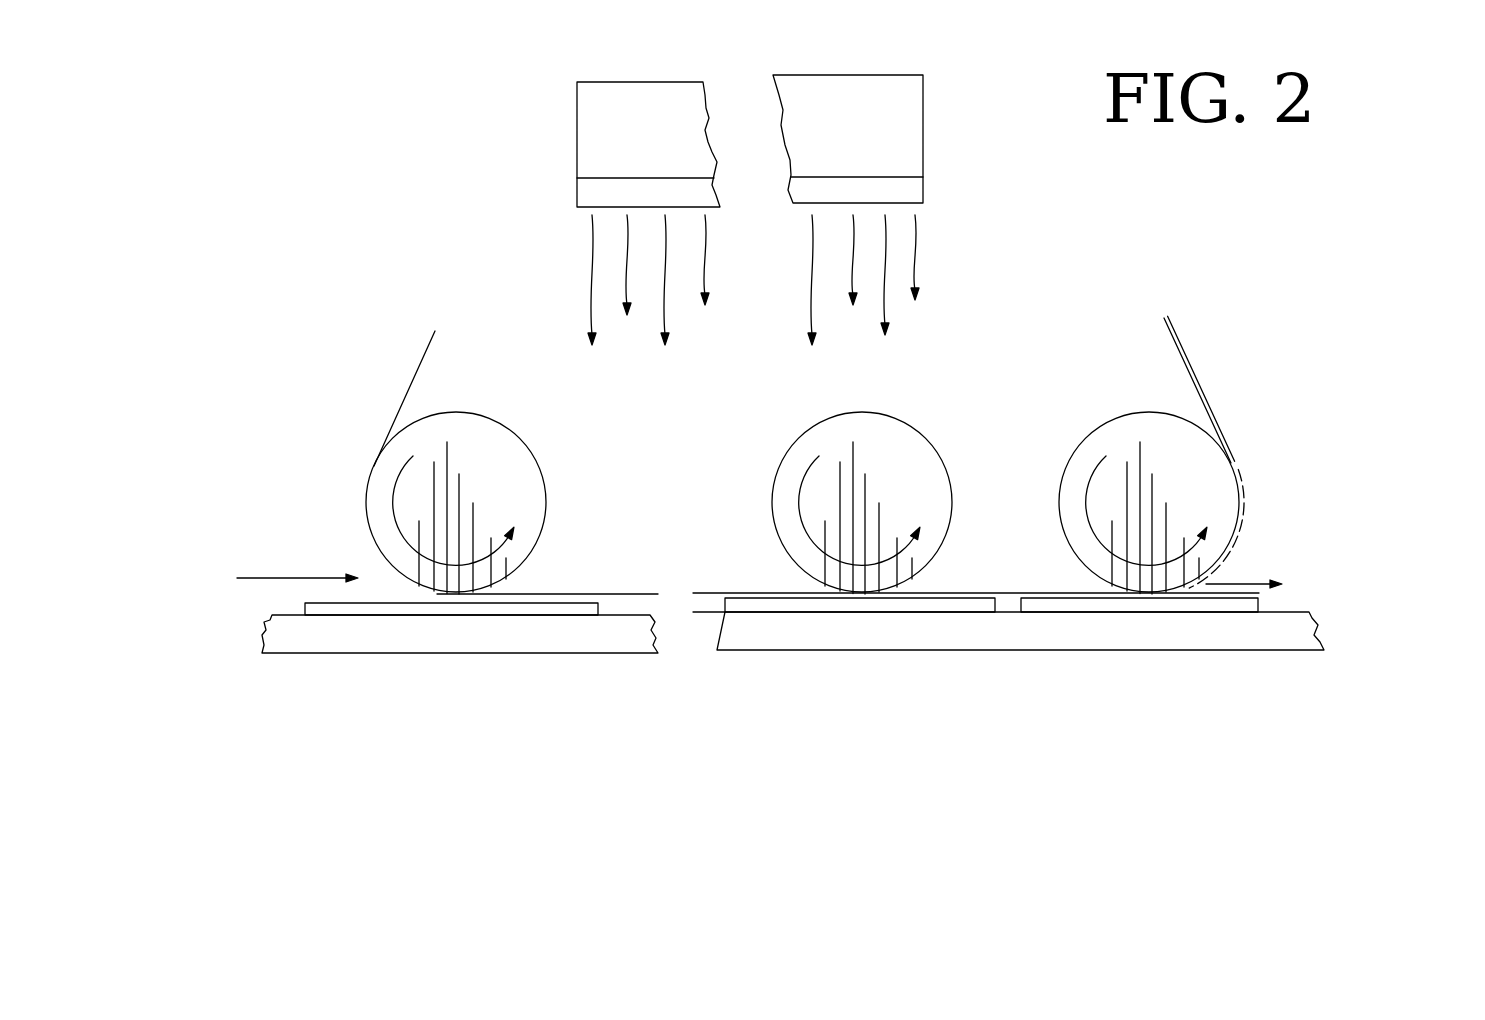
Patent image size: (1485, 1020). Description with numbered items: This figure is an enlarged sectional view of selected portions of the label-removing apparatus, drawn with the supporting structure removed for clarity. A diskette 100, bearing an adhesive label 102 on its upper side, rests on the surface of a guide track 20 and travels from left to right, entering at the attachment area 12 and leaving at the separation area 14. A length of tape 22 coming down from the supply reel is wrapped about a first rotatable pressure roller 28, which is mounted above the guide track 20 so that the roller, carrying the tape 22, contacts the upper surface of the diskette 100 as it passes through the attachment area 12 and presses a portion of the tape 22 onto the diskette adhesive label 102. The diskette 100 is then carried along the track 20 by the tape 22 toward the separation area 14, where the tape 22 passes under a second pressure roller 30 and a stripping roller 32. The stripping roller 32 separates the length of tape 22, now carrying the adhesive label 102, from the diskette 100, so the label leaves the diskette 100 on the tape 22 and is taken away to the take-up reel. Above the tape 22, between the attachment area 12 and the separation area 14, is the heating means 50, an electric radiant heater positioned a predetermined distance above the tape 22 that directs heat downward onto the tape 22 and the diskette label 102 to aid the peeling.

The heating means 50 is at (605, 140).
The tape 22 is at (397, 383).
The adhesive label 102 is at (1246, 440).
The separation area 14 is at (1240, 565).
The attachment area 12 is at (266, 578).
The first rotatable pressure roller 28 is at (527, 510).
The second pressure roller 30 is at (890, 577).
The stripping roller 32 is at (1113, 509).
The diskette 100 is at (362, 608).
The guide track 20 is at (565, 635).